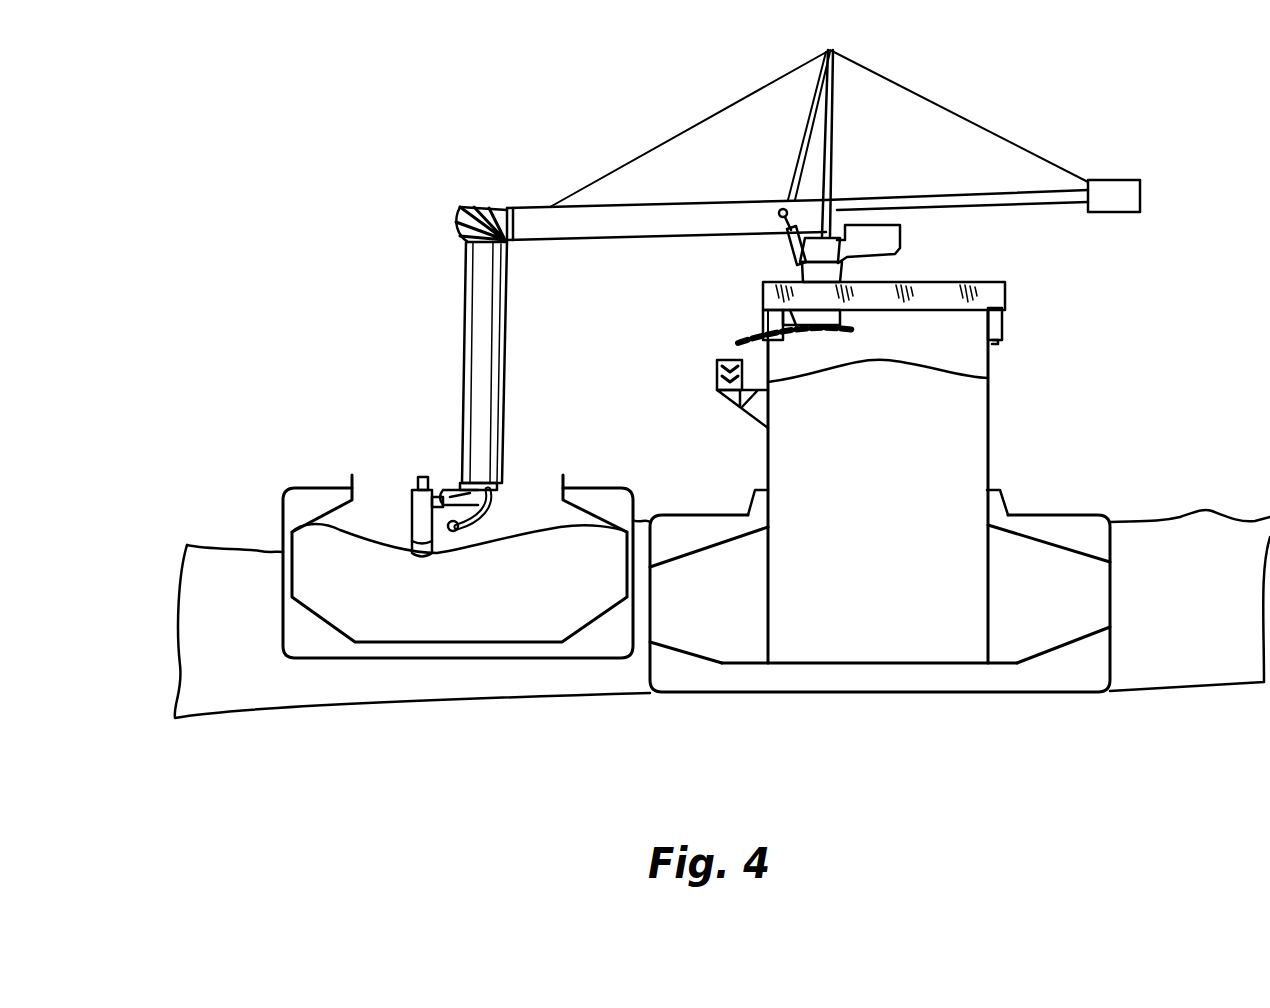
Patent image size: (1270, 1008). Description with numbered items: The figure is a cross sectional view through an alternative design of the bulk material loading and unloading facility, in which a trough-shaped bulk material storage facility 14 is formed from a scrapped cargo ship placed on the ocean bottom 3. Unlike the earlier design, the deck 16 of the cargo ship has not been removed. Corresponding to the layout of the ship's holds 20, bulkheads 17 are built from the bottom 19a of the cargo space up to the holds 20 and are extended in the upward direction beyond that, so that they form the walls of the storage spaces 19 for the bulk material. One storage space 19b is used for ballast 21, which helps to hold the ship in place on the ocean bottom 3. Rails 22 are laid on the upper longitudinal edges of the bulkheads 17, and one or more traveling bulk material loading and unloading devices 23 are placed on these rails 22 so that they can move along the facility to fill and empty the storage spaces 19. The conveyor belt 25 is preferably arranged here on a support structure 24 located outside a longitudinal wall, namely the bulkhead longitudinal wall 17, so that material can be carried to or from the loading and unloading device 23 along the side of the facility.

The ocean bottom 3 is at (1188, 683).
The trough-shaped bulk material storage facility 14 is at (967, 405).
The deck of the scrapped cargo ship 16 is at (1045, 512).
The bulkheads 17 is at (988, 443).
The storage spaces 19 is at (848, 590).
The storage space bottom 19a is at (913, 665).
The storage space used for ballast 19b is at (1035, 622).
The holds of the scrapped ship 20 is at (862, 457).
The ballast 21 is at (730, 678).
The rails 22 is at (1005, 342).
The bulk material loading and unloading device 23 is at (543, 222).
The support structure for the conveyor belt 24 is at (725, 400).
The conveyor belt 25 is at (717, 365).